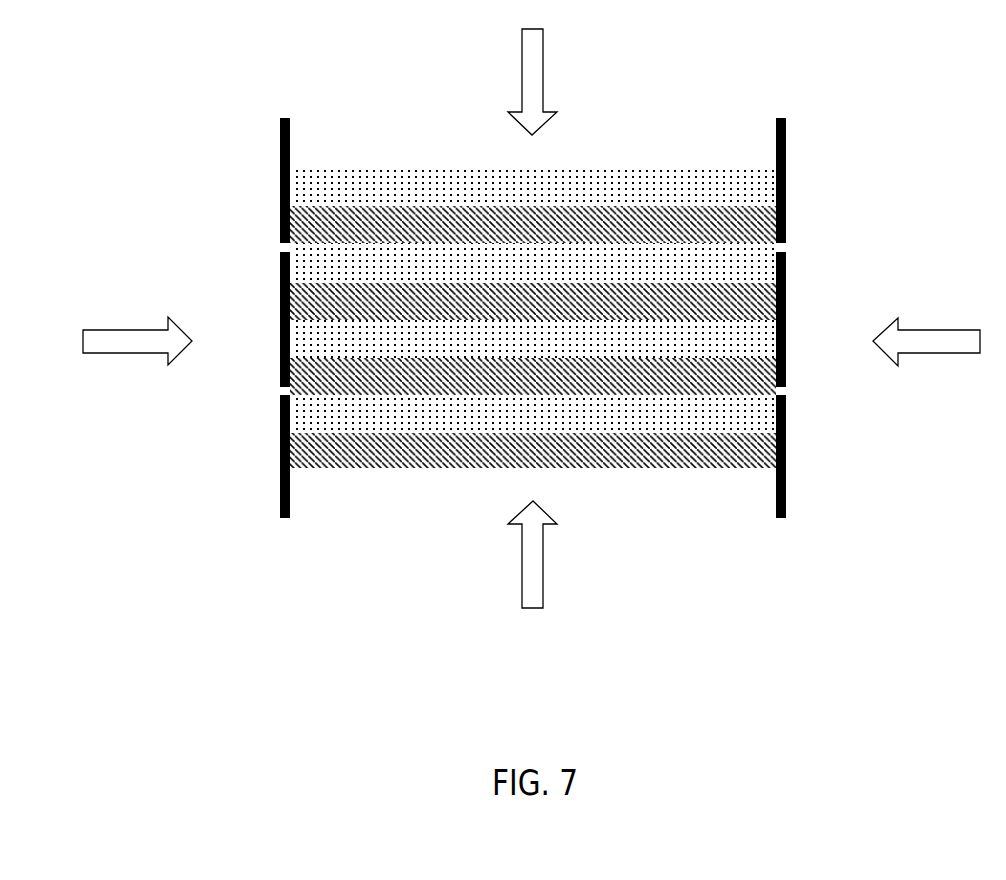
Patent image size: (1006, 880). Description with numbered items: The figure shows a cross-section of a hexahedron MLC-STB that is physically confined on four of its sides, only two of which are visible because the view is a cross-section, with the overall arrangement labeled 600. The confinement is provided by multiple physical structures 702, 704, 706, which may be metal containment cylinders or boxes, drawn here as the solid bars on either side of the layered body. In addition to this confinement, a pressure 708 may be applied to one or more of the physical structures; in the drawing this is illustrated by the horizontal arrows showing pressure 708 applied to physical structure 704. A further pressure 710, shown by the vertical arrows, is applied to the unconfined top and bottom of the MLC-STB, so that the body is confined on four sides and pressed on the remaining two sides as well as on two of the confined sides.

The laminated stack assembly 600 is at (238, 56).
The physical structure 702 is at (280, 222).
The physical structure 704 is at (280, 370).
The physical structure 706 is at (280, 450).
The pressure 708 is at (100, 354).
The pressure 710 is at (543, 58).